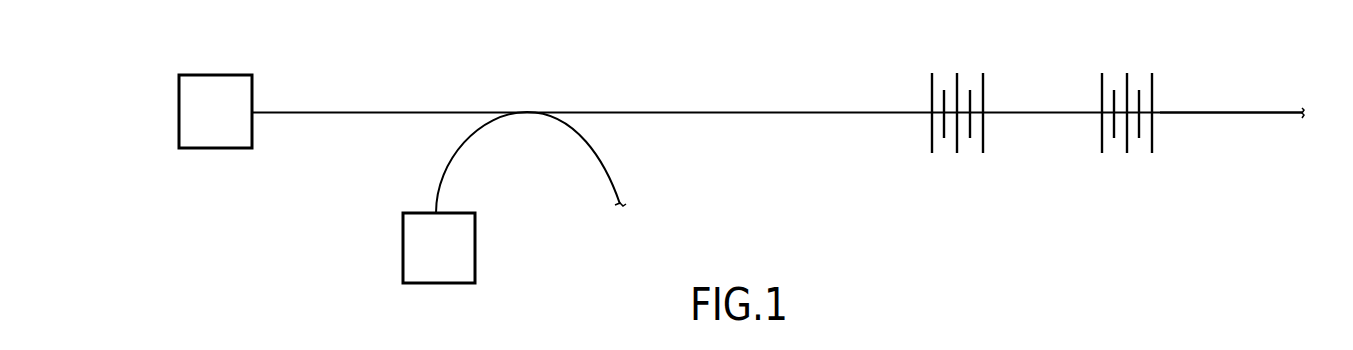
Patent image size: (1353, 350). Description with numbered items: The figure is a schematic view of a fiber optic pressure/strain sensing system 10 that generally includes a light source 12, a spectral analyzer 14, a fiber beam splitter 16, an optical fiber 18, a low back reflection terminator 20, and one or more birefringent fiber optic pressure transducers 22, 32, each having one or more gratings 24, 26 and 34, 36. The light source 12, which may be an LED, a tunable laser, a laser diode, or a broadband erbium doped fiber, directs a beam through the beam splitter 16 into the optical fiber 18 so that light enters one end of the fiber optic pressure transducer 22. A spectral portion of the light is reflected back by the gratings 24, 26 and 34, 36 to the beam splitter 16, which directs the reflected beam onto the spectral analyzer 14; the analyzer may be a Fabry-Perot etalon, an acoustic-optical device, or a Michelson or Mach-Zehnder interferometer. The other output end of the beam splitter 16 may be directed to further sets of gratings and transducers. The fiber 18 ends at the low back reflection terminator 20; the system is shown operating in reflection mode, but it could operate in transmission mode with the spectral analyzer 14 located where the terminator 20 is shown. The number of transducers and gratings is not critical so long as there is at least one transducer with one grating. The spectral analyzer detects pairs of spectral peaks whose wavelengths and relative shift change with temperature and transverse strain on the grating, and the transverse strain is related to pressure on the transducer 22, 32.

The fiber optic pressure/strain sensing system 10 is at (312, 240).
The light source 12 is at (244, 75).
The spectral analyzer 14 is at (475, 243).
The fiber beam splitter 16 is at (529, 112).
The optical fiber 18 is at (762, 112).
The low back reflection terminator 20 is at (1265, 143).
The birefringent fiber optic pressure transducer 22 is at (957, 142).
The grating 24 is at (983, 88).
The grating 26 is at (931, 135).
The birefringent fiber optic pressure transducer 32 is at (1128, 142).
The grating 34 is at (1153, 88).
The grating 36 is at (1101, 137).